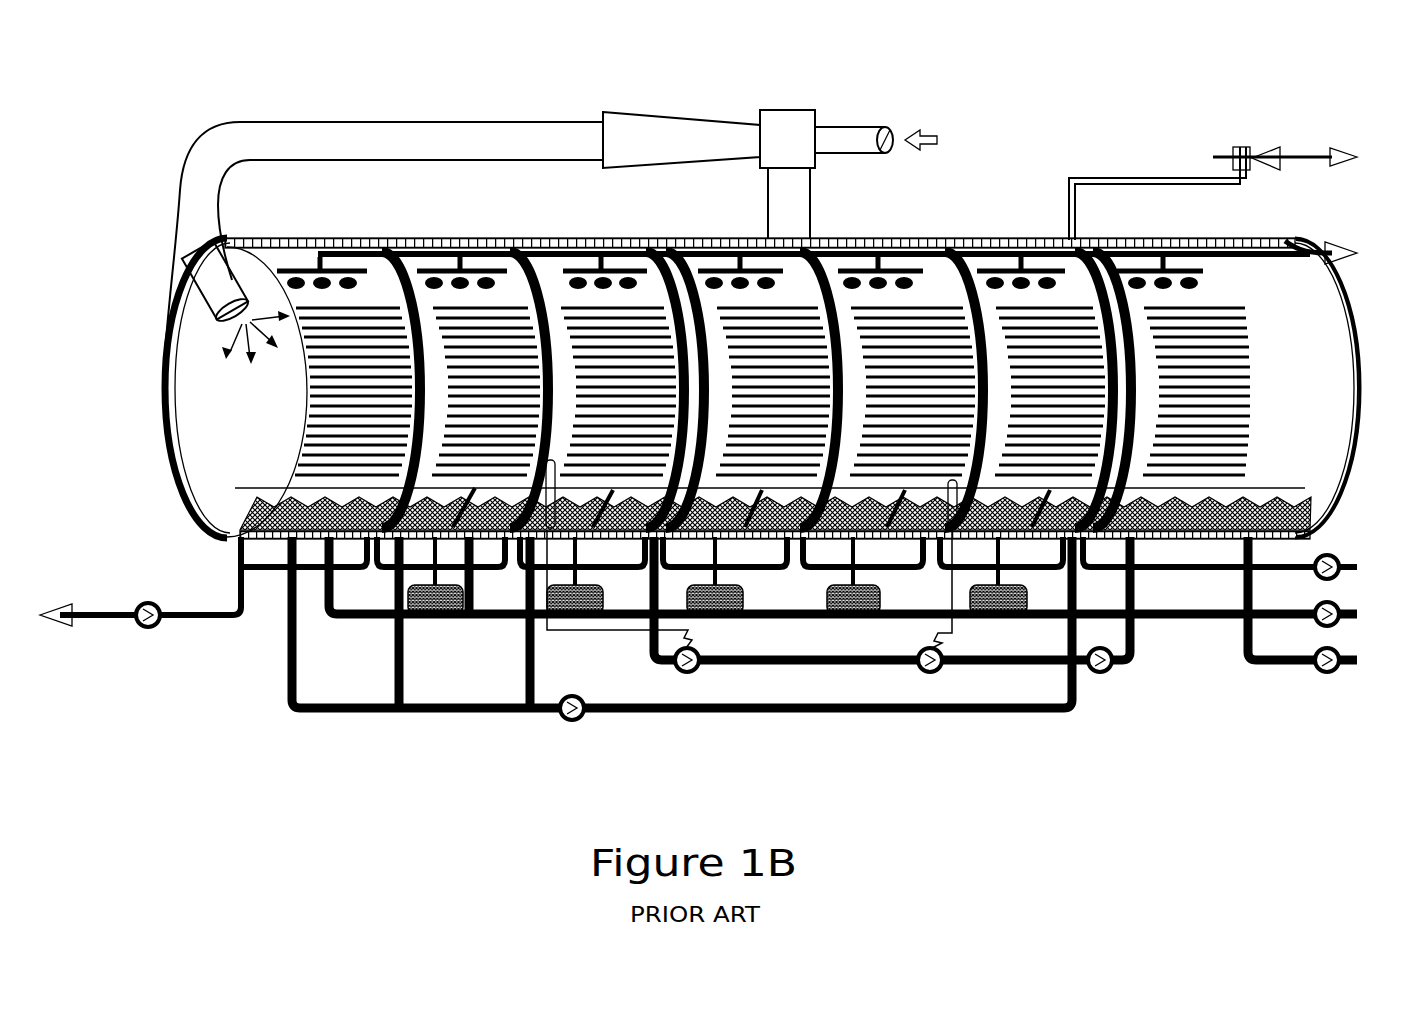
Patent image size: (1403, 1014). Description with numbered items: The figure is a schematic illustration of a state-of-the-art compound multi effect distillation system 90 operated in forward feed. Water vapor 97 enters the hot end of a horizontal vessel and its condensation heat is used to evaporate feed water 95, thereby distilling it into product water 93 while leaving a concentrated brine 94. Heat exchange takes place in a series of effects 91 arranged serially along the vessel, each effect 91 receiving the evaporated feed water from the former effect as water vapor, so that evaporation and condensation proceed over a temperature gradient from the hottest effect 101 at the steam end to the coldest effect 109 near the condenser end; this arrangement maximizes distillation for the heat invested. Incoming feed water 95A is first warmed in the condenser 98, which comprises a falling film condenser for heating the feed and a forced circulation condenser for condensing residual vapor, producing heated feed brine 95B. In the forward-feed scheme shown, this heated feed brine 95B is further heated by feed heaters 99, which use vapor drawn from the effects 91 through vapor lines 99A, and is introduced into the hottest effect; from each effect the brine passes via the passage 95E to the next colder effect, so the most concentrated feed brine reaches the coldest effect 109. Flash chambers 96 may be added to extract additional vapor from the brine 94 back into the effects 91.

The multi effect distillation system 90 is at (797, 37).
The effects 91 is at (743, 354).
The hottest effect 101 is at (505, 224).
The coldest effect 109 is at (1060, 224).
The product water 93 is at (110, 618).
The brine 94 is at (1300, 612).
The feed water 95 is at (610, 270).
The feed water inlet 95A is at (1347, 250).
The heated feed brine 95B is at (1135, 667).
The inter-effect feed passage 95E is at (800, 712).
The flash chambers 96 is at (437, 612).
The water vapor 97 is at (895, 124).
The condenser 98 is at (1355, 330).
The feed heaters 99 is at (697, 652).
The vapor lines from effects to feed heaters 99A is at (547, 630).